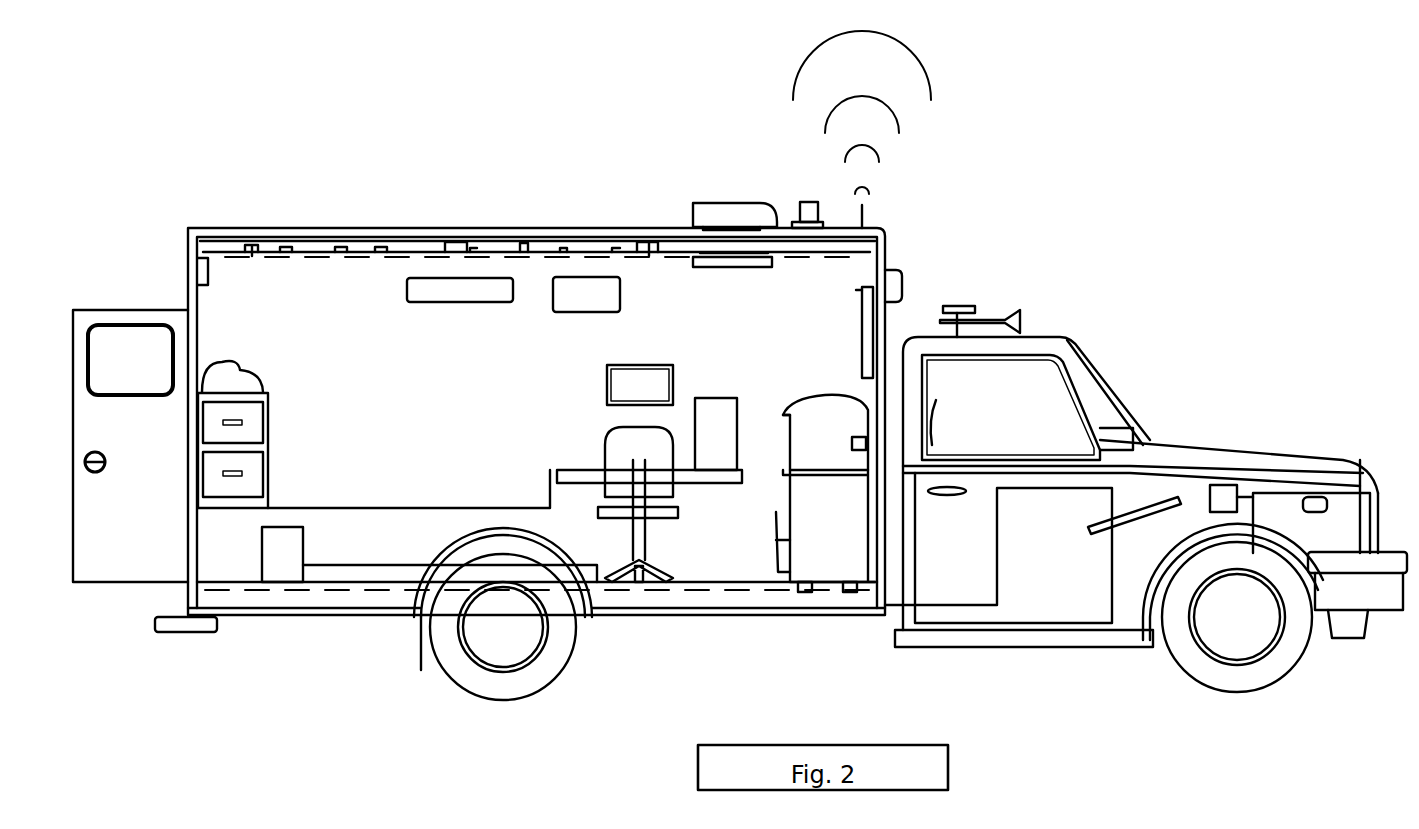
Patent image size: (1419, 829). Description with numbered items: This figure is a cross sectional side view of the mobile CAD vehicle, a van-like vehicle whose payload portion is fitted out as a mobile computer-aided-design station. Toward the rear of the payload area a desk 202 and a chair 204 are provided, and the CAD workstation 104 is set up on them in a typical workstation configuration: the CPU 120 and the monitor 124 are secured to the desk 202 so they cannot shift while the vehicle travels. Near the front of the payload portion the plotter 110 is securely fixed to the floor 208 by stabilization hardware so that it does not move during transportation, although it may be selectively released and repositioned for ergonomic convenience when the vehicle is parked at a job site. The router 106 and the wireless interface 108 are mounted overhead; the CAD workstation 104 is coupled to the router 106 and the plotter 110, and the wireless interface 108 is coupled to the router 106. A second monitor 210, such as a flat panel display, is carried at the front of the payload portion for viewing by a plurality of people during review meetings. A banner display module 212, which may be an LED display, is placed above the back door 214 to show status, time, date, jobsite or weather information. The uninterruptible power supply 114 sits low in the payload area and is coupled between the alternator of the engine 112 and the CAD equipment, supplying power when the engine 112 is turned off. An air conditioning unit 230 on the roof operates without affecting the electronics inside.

The CAD workstation 104 is at (536, 421).
The router 106 is at (460, 303).
The wireless interface 108 is at (620, 307).
The plotter 110 is at (825, 405).
The engine 112 is at (1290, 490).
The uninterruptible power supply 114 is at (290, 563).
The CPU 120 is at (716, 412).
The monitor 124 is at (673, 388).
The desk 202 is at (562, 484).
The chair 204 is at (620, 445).
The floor 208 is at (402, 574).
The second monitor 210 is at (905, 288).
The banner display module 212 is at (198, 265).
The back door 214 is at (118, 340).
The air conditioning unit 230 is at (738, 215).